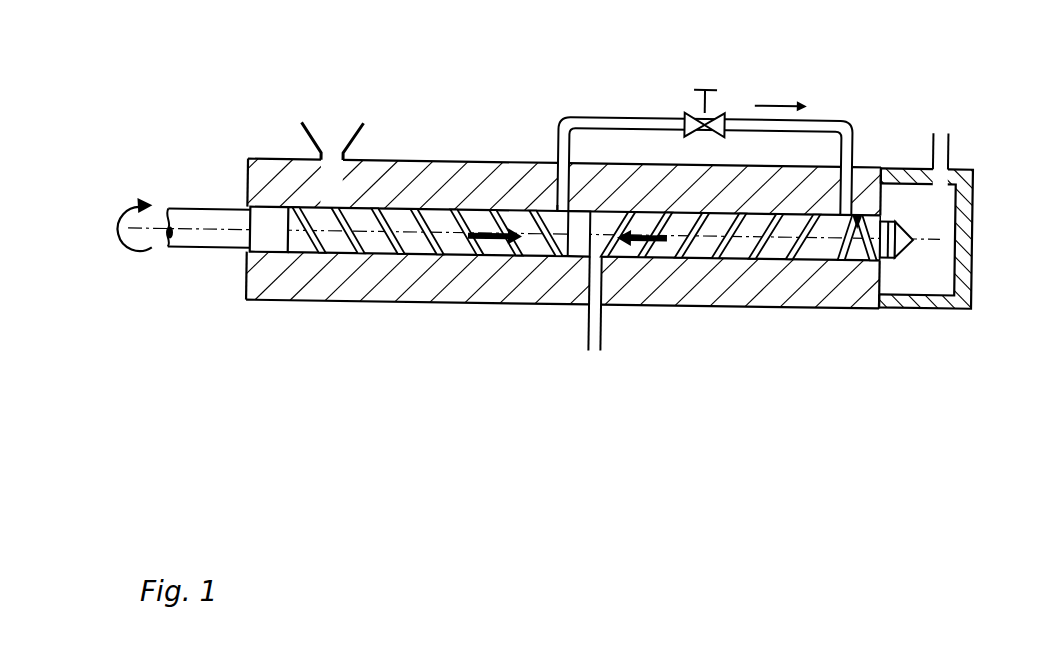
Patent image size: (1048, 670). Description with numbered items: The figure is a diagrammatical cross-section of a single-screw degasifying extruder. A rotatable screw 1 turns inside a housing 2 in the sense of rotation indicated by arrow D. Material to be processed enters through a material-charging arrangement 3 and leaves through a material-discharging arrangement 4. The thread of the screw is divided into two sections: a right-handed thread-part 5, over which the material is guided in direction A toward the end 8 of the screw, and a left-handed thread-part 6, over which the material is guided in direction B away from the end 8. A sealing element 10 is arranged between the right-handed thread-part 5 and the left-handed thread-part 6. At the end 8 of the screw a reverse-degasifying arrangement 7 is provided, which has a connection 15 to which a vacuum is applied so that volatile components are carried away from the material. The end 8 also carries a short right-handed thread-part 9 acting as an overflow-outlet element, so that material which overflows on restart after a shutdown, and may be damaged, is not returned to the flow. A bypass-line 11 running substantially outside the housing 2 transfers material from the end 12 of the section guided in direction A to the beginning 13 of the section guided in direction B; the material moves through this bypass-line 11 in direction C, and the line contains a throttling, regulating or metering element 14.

The rotatable screw 1 is at (552, 223).
The housing 2 is at (408, 181).
The material-charging arrangement 3 is at (330, 145).
The material-discharging arrangement 4 is at (595, 335).
The right-handed thread-part of screw 5 is at (363, 252).
The left-handed thread-part of screw 6 is at (720, 246).
The reverse-degasifying arrangement 7 is at (898, 172).
The end of screw 8 is at (891, 247).
The short right-handed thread-part 9 is at (870, 247).
The sealing element 10 is at (582, 244).
The bypass-line 11 is at (666, 122).
The end of section guided in direction A 12 is at (556, 205).
The beginning of section guided in direction B 13 is at (843, 226).
The throttling, regulating or metering element 14 is at (697, 120).
The connection 15 is at (938, 138).
The direction of material guidance toward screw end A is at (491, 243).
The direction of material guidance away from screw end B is at (654, 250).
The direction of material flow through bypass-line C is at (781, 70).
The sense of rotation of screw D is at (136, 208).